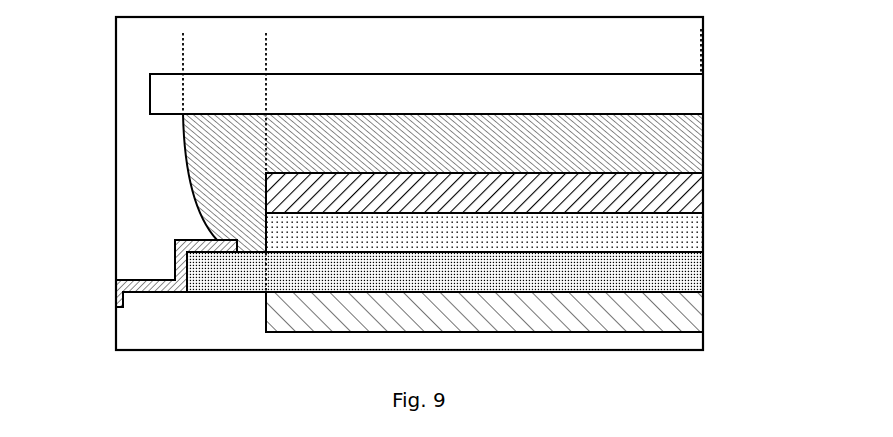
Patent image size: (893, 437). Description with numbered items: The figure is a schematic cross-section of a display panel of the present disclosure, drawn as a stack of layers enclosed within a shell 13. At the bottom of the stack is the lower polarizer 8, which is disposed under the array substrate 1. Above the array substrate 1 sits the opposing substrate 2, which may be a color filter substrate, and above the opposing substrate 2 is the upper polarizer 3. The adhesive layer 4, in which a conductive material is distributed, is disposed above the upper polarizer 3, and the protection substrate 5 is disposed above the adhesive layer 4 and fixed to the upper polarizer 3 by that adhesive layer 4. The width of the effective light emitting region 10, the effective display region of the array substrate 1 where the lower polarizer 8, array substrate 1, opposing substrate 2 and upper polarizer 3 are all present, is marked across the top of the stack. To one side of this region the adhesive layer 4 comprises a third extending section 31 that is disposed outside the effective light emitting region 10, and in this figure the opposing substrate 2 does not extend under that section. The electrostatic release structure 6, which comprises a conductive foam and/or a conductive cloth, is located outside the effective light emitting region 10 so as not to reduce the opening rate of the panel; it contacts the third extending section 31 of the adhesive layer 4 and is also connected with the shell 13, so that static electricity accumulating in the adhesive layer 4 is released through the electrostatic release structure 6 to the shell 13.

The array substrate 1 is at (703, 271).
The opposing substrate 2 is at (703, 236).
The upper polarizer 3 is at (703, 191).
The adhesive layer 4 is at (703, 153).
The protection substrate 5 is at (703, 92).
The electrostatic release structure 6 is at (119, 281).
The lower polarizer 8 is at (703, 311).
The effective light emitting region 10 is at (700, 54).
The shell 13 is at (116, 200).
The third extending section 31 is at (265, 54).